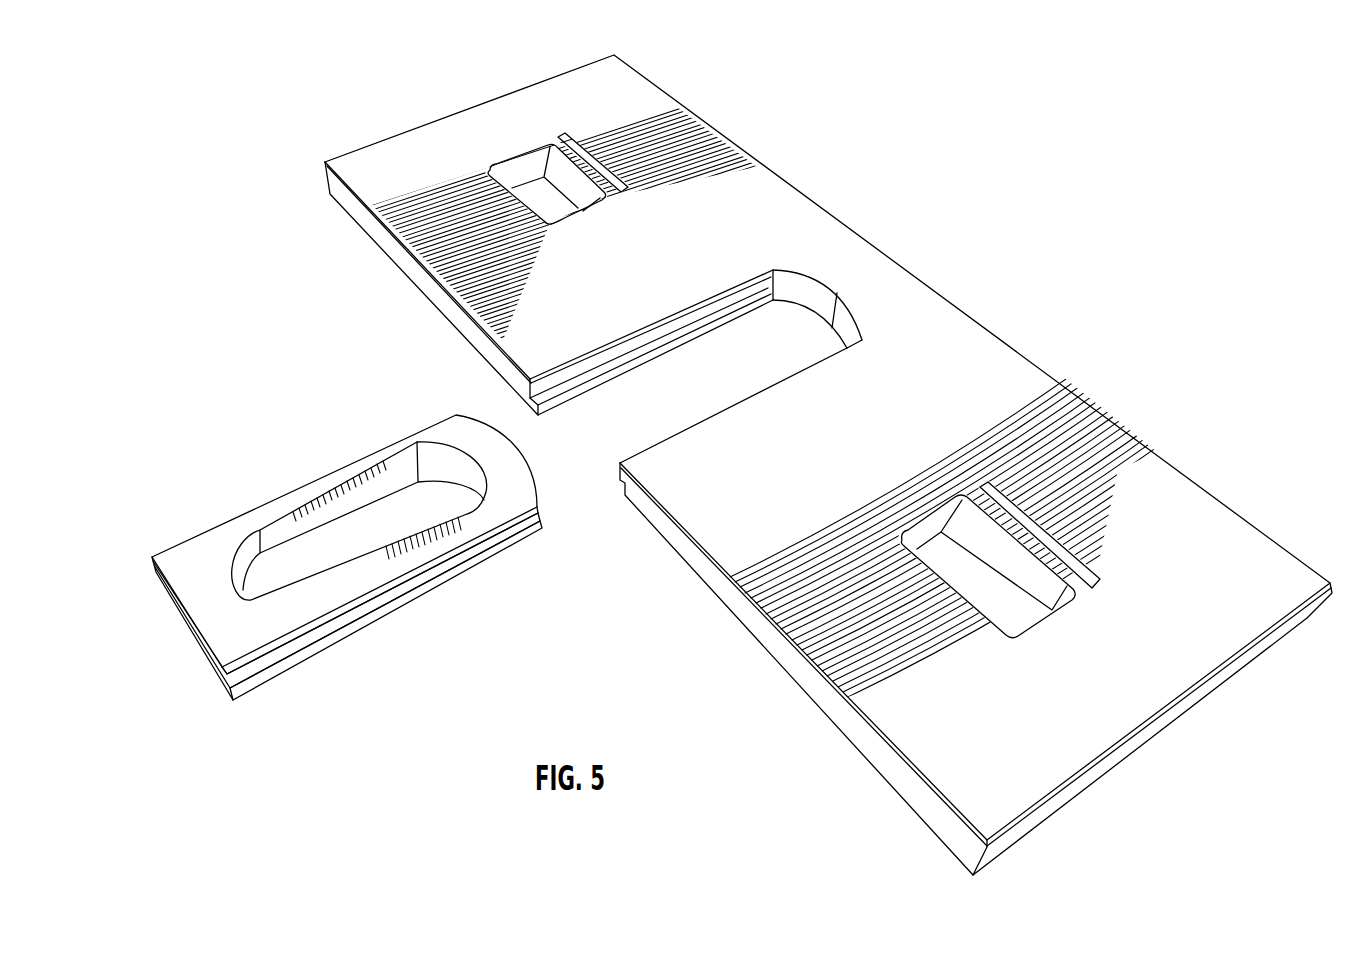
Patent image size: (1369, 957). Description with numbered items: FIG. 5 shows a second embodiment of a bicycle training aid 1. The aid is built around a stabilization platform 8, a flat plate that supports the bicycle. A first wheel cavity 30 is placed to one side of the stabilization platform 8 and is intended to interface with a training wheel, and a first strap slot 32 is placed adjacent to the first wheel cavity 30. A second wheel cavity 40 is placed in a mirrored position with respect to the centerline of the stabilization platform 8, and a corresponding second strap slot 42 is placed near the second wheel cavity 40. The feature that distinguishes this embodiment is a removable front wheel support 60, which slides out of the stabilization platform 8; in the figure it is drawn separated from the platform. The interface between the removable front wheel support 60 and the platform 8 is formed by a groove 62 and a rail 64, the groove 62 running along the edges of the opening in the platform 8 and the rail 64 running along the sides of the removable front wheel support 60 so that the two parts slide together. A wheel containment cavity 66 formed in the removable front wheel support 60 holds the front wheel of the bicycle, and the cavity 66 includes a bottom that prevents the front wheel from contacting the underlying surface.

The bicycle training aid 1 is at (1005, 261).
The stabilization platform 8 is at (1028, 380).
The first wheel cavity 30 is at (553, 223).
The first strap slot 32 is at (630, 185).
The second wheel cavity 40 is at (1024, 636).
The second strap slot 42 is at (1097, 567).
The removable front wheel support 60 is at (203, 567).
The groove 62 is at (605, 369).
The rail 64 is at (442, 580).
The wheel containment cavity 66 is at (441, 471).